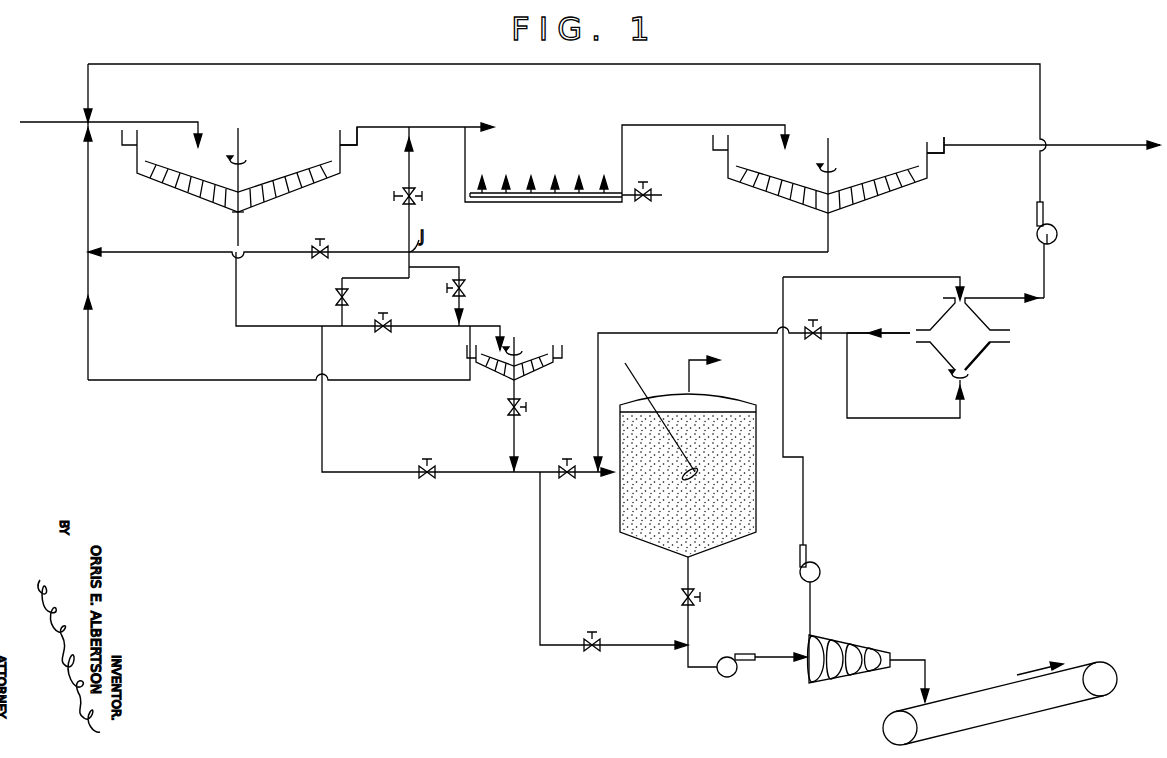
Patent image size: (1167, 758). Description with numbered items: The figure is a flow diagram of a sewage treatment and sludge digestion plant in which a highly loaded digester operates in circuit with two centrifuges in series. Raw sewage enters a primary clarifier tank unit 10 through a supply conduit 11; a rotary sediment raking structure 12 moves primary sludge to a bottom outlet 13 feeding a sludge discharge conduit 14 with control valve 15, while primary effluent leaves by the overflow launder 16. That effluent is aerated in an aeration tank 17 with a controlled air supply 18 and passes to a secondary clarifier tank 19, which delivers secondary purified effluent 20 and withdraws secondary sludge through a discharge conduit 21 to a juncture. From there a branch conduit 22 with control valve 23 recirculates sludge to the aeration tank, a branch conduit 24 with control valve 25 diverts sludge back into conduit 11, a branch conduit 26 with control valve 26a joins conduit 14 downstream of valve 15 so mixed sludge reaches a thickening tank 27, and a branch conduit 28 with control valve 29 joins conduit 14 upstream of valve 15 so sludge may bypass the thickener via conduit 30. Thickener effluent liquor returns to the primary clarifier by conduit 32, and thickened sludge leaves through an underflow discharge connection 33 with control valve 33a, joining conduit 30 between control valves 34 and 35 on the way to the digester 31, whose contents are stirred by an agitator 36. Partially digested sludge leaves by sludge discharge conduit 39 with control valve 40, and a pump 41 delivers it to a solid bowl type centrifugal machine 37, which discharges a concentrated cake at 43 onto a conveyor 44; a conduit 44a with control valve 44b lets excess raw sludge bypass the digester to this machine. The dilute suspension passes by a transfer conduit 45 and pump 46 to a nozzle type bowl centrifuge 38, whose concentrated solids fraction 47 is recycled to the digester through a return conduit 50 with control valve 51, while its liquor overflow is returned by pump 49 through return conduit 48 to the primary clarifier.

The primary clarifier tank unit 10 is at (133, 160).
The supply conduit 11 is at (40, 118).
The rotary sediment raking structure 12 is at (243, 183).
The bottom outlet 13 is at (240, 213).
The sludge discharge conduit 14 is at (233, 287).
The control valve 15 is at (380, 320).
The overflow launder 16 is at (345, 128).
The aeration tank 17 is at (624, 163).
The controlled air supply 18 is at (628, 200).
The secondary clarifier tank 19 is at (930, 167).
The secondary purified effluent 20 is at (980, 145).
The discharge conduit 21 is at (826, 233).
The branch conduit 22 is at (411, 167).
The control valve 23 is at (414, 197).
The branch conduit 24 is at (355, 251).
The control valve 25 is at (317, 245).
The branch conduit 26 is at (462, 272).
The control valve 26a is at (468, 291).
The thickening tank 27 is at (548, 370).
The branch conduit 28 is at (386, 283).
The control valve 29 is at (335, 298).
The conduit 30 is at (325, 441).
The digester 31 is at (620, 515).
The conduit 32 is at (355, 380).
The underflow discharge connection 33 is at (512, 443).
The control valve 33a is at (505, 408).
The control valve 34 is at (428, 480).
The control valve 35 is at (567, 480).
The agitator 36 is at (636, 373).
The solid bowl type centrifugal machine 37 is at (862, 648).
The nozzle type bowl centrifuge 38 is at (985, 363).
The sludge discharge conduit 39 is at (695, 378).
The control valve 40 is at (680, 597).
The pump 41 is at (733, 652).
The cake discharge 43 is at (905, 660).
The conveyor 44 is at (960, 695).
The conduit 44a is at (540, 592).
The control valve 44b is at (590, 655).
The transfer conduit 45 is at (805, 521).
The pump 46 is at (820, 568).
The concentrated solids fraction 47 is at (890, 333).
The return conduit 48 is at (961, 64).
The pump 49 is at (1057, 228).
The return conduit 50 is at (697, 333).
The control valve 51 is at (820, 326).